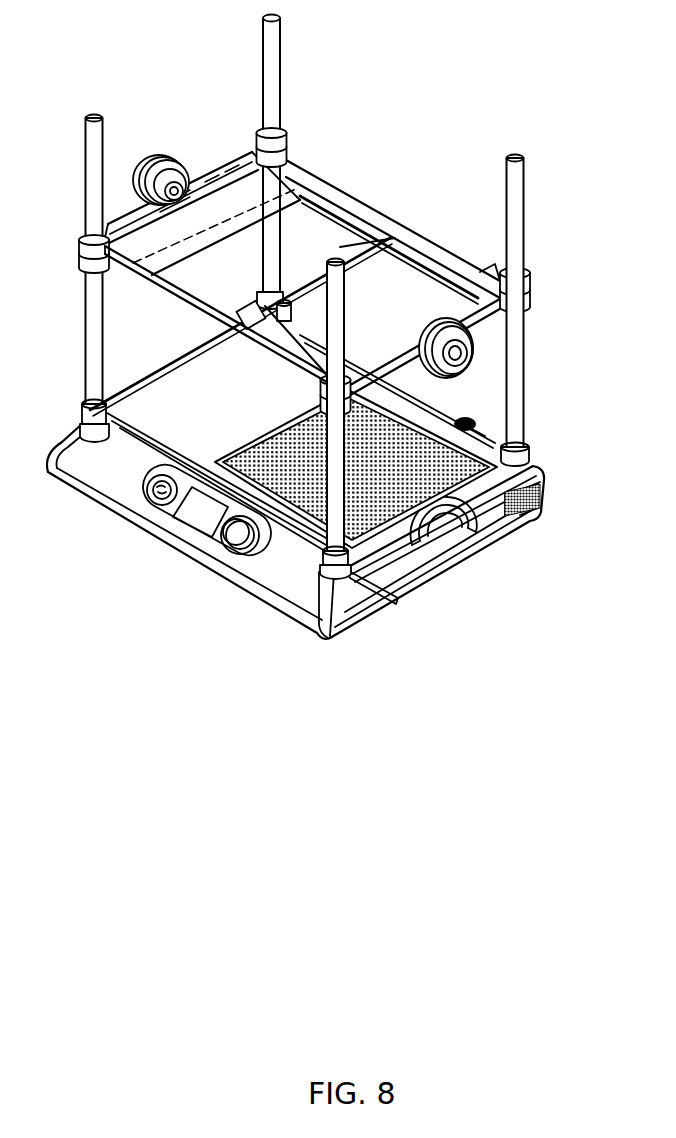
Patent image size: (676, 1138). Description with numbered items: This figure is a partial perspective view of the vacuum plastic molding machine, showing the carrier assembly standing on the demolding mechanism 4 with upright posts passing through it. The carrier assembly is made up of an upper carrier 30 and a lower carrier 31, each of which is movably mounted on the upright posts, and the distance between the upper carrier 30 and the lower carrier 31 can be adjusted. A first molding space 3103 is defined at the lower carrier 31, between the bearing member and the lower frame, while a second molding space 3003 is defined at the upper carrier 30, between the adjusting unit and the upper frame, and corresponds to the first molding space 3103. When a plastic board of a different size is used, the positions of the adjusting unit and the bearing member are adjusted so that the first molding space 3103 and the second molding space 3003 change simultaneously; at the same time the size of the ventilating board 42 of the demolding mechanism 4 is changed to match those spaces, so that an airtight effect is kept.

The upper carrier 30 is at (350, 203).
The second molding space 3003 is at (421, 217).
The lower carrier 31 is at (227, 347).
The first molding space 3103 is at (292, 366).
The demolding mechanism 4 is at (273, 578).
The ventilating board 42 is at (433, 577).